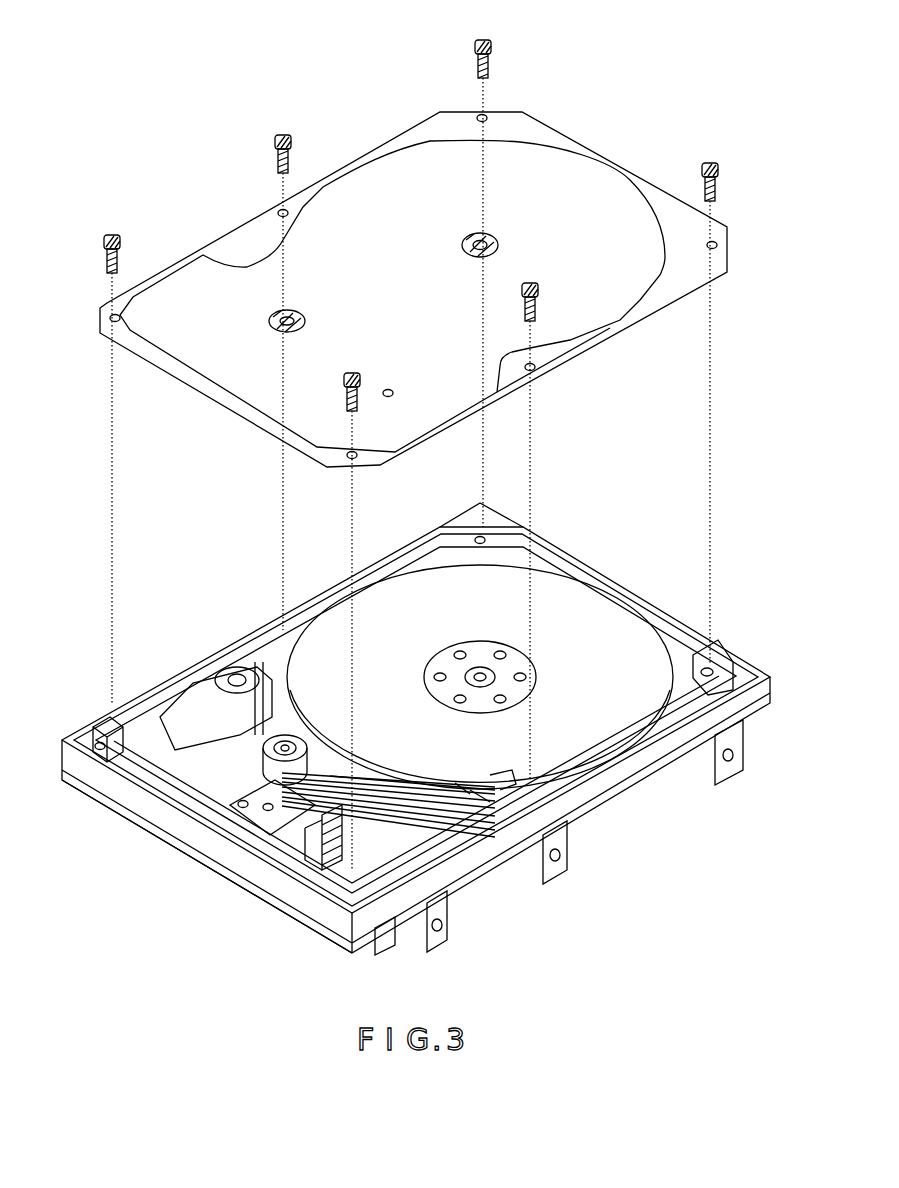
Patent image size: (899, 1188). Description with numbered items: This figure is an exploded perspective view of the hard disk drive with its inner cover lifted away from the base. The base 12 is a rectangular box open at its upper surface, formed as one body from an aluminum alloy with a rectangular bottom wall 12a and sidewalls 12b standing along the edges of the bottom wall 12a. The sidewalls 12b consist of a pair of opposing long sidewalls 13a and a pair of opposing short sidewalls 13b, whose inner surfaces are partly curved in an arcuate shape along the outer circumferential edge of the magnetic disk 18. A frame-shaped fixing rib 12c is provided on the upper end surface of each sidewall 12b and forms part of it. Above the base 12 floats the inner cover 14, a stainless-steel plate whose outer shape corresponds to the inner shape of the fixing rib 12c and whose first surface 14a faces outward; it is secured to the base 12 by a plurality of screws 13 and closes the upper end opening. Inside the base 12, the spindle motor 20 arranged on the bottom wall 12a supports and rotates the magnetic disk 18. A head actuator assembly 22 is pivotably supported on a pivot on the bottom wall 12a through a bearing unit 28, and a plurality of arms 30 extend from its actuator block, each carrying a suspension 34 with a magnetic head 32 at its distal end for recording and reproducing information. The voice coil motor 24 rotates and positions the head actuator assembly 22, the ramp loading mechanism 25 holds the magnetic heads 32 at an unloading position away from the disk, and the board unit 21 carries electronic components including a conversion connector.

The base 12 is at (590, 830).
The bottom wall 12a is at (440, 880).
The sidewalls 12b is at (500, 887).
The fixing rib 12c is at (577, 549).
The screws 13 is at (485, 38).
The long sidewalls 13a is at (636, 818).
The short sidewalls 13b is at (227, 860).
The inner cover 14 is at (582, 175).
The first surface 14a is at (373, 177).
The magnetic disk 18 is at (612, 590).
The spindle motor 20 is at (432, 667).
The board unit 21 is at (290, 883).
The head actuator assembly 22 is at (376, 757).
The voice coil motor 24 is at (215, 780).
The ramp loading mechanism 25 is at (497, 767).
The bearing unit 28 is at (312, 730).
The arms 30 is at (392, 770).
The magnetic head 32 is at (474, 785).
The suspension 34 is at (456, 780).